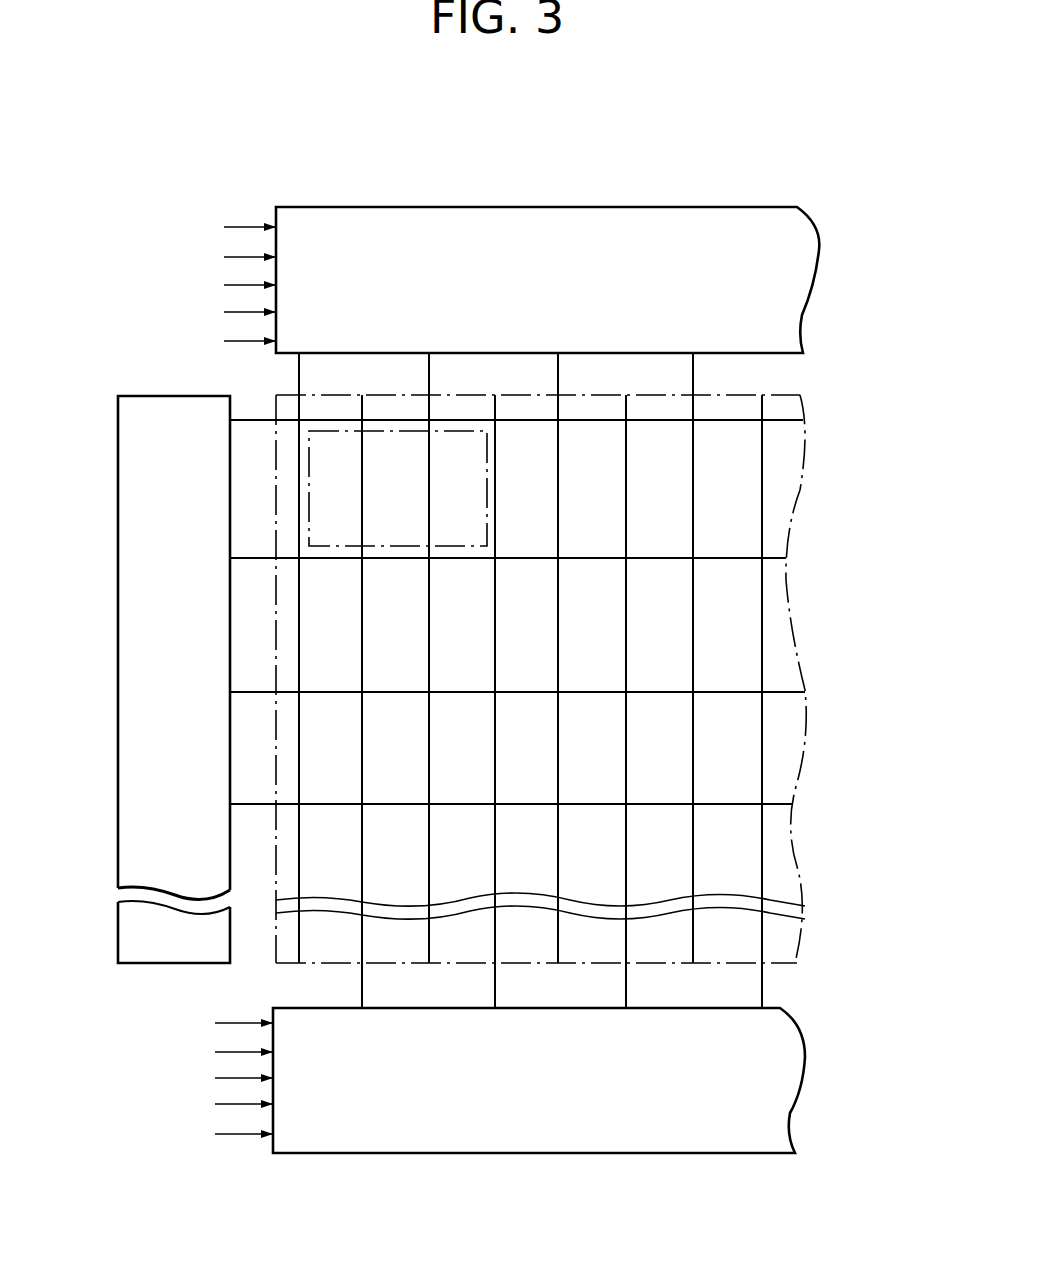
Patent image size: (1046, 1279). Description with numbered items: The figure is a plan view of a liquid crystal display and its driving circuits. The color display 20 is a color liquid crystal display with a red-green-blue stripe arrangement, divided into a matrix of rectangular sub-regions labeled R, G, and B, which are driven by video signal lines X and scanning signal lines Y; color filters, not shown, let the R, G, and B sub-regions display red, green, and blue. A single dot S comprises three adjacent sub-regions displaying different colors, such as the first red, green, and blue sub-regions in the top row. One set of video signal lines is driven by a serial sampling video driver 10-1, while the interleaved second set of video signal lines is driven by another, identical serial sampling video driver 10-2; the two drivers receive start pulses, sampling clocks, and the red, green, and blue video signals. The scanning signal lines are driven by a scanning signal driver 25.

The serial sampling video driver 10-1 is at (705, 205).
The serial sampling video driver 10-2 is at (690, 1155).
The color display 20 is at (778, 396).
The scanning signal driver 25 is at (133, 395).
The dot S is at (309, 481).